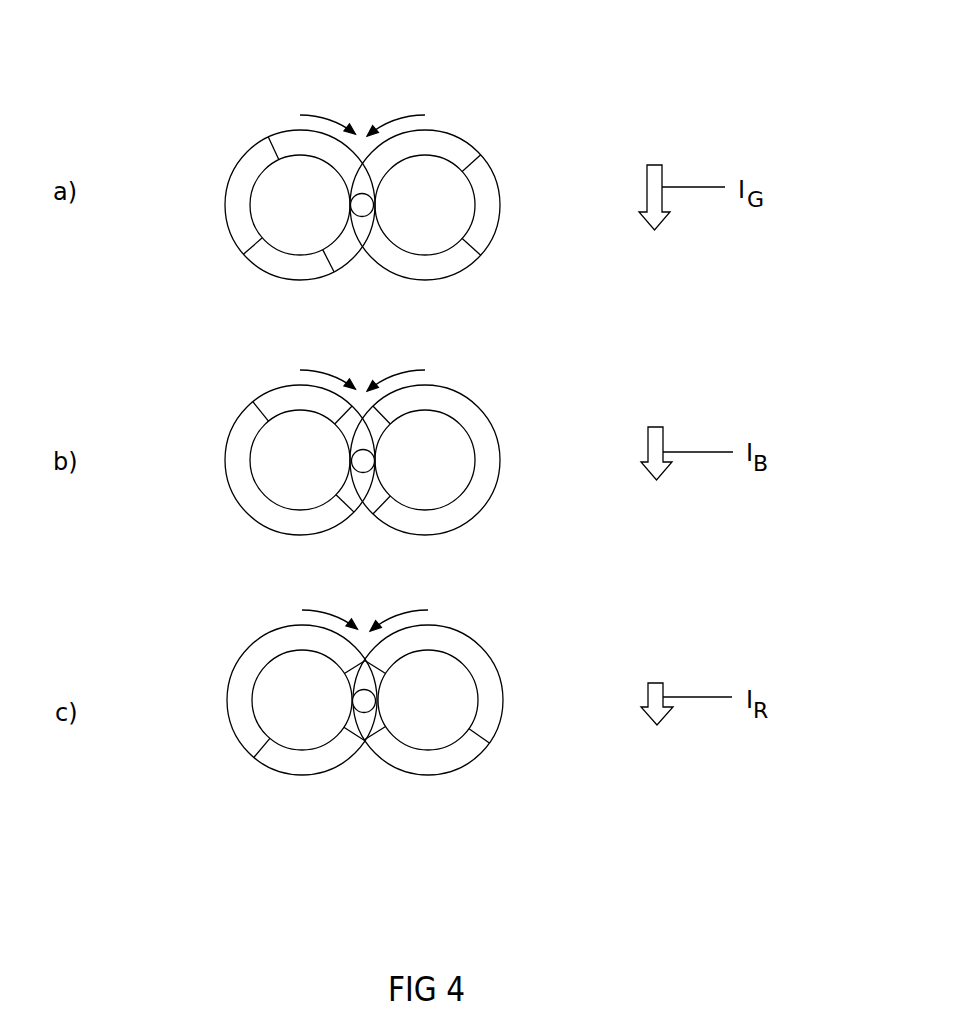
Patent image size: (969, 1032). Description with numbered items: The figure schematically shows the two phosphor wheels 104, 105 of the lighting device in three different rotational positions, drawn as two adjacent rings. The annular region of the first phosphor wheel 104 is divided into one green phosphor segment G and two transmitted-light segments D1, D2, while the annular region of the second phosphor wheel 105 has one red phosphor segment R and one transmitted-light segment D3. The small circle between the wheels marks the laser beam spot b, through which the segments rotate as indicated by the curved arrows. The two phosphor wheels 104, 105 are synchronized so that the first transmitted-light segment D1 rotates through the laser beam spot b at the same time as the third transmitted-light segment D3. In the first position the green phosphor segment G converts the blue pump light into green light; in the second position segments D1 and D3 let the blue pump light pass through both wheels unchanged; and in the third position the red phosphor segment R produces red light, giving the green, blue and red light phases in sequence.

The first phosphor wheel 104 is at (237, 160).
The second phosphor wheel 105 is at (458, 117).
The green phosphor segment G is at (290, 140).
The red phosphor segment R is at (467, 138).
The first transmitted-light segment D1 is at (242, 213).
The second transmitted-light segment D2 is at (288, 262).
The third transmitted-light segment D3 is at (482, 227).
The laser beam spot b is at (362, 205).